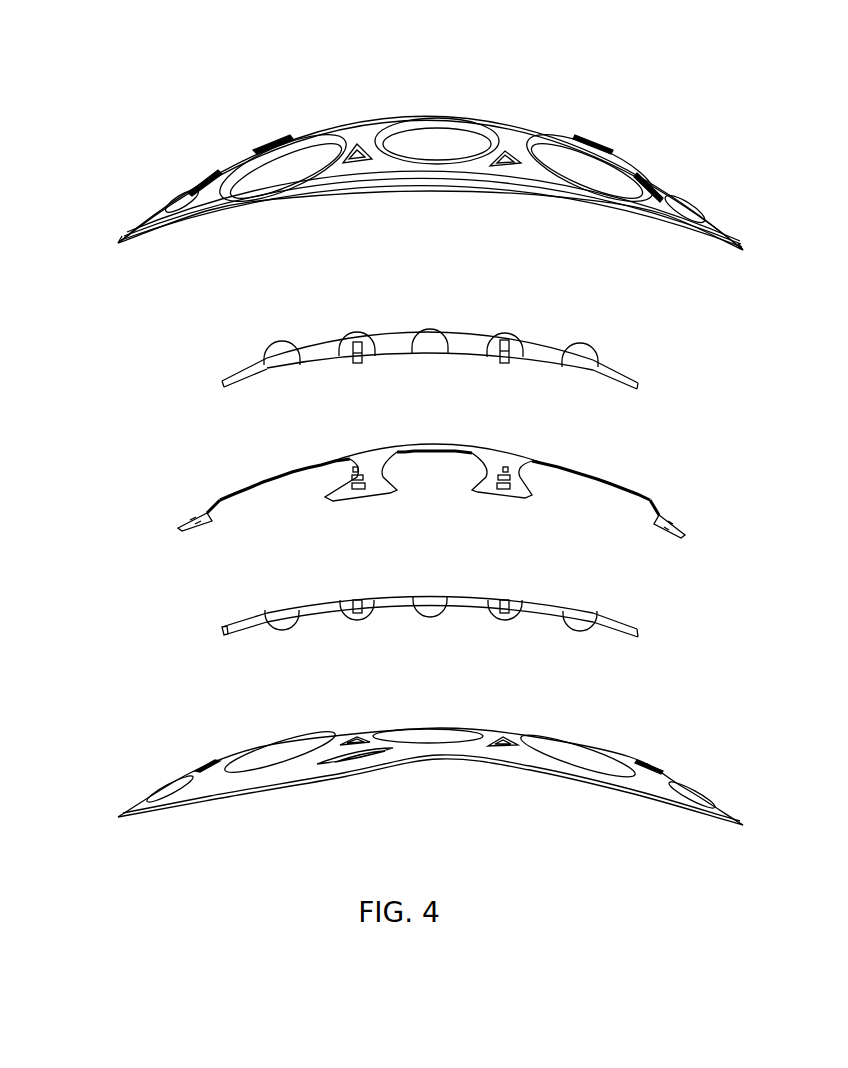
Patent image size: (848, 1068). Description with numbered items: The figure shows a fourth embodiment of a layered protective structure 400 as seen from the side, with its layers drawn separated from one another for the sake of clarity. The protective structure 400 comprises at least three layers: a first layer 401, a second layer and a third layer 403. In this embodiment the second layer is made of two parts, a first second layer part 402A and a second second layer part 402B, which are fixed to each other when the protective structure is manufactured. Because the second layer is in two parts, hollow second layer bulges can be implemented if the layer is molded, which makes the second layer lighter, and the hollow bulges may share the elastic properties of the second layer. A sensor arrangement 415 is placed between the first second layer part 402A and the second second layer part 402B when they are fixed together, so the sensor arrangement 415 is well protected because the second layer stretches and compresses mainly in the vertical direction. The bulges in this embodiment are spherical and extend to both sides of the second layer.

The protective structure 400 is at (79, 44).
The first layer 401 is at (155, 210).
The first second layer part 402A is at (248, 367).
The sensor arrangement 415 is at (220, 500).
The second second layer part 402B is at (247, 613).
The third layer 403 is at (150, 788).